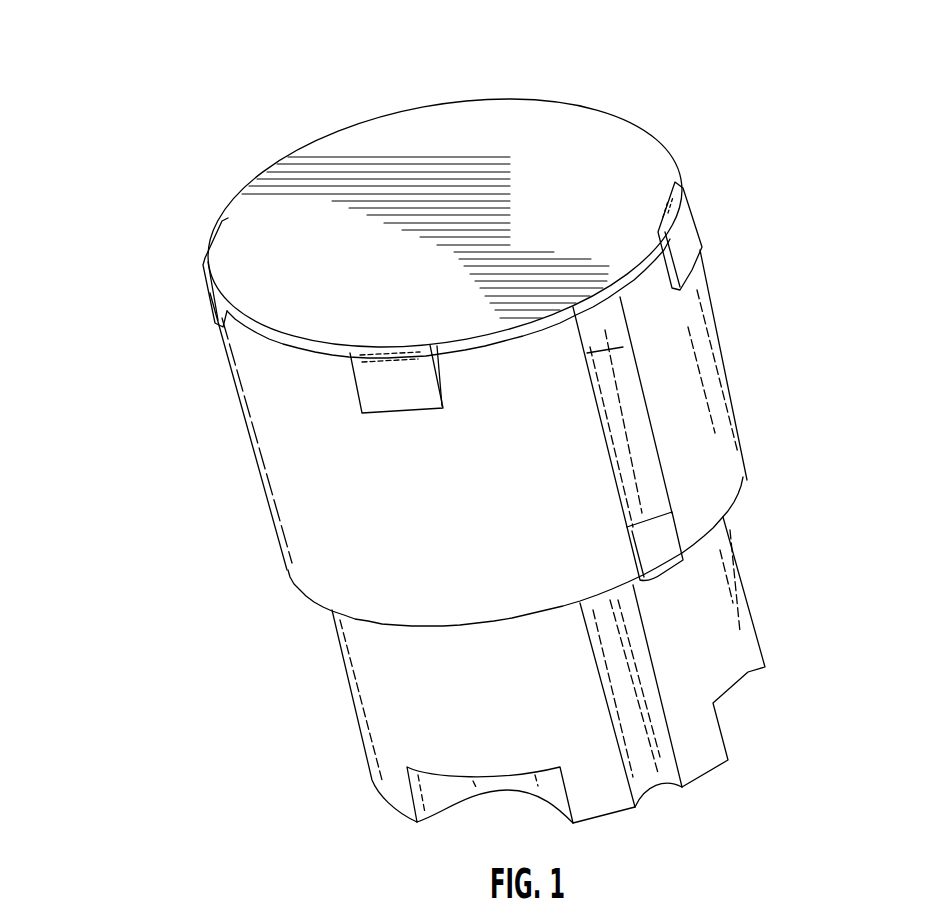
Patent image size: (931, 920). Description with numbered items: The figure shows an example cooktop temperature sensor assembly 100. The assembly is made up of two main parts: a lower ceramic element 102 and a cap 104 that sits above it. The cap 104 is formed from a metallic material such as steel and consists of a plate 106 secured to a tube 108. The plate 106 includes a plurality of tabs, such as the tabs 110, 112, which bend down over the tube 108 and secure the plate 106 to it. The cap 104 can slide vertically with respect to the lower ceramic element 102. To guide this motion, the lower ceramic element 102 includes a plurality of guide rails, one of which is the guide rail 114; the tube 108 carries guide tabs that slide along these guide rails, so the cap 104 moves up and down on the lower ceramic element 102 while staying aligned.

The cooktop temperature sensor assembly 100 is at (172, 191).
The lower ceramic element 102 is at (407, 720).
The cap 104 is at (587, 152).
The plate 106 is at (363, 153).
The tube 108 is at (313, 497).
The tab 110 is at (373, 380).
The tab 112 is at (692, 237).
The guide rail 114 is at (638, 748).